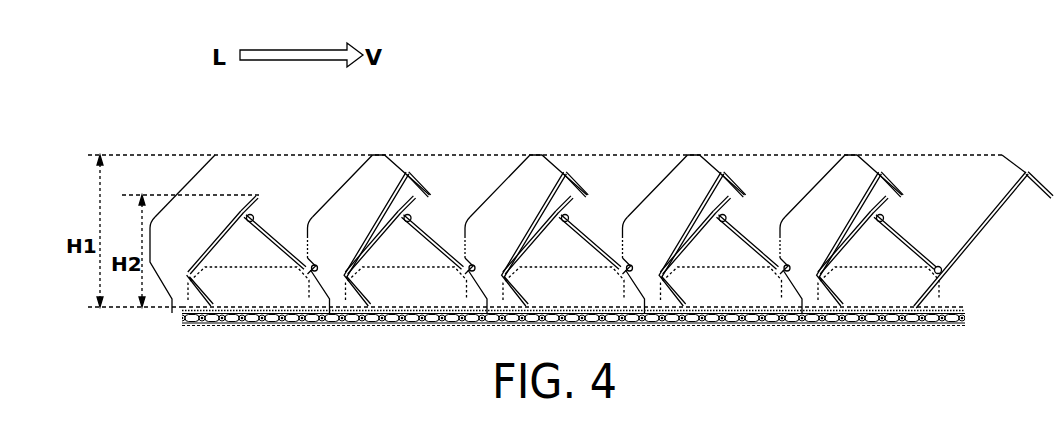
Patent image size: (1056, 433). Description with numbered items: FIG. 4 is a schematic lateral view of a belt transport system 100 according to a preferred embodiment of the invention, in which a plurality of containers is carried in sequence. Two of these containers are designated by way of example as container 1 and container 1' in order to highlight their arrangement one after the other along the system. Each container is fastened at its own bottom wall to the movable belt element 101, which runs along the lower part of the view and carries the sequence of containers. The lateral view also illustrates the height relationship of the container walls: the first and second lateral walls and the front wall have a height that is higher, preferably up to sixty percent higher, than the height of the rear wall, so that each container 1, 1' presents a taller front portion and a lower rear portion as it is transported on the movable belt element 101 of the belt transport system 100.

The belt transport system 100 is at (942, 148).
The container 1 is at (544, 206).
The container 1' is at (702, 204).
The movable belt element 101 is at (293, 323).